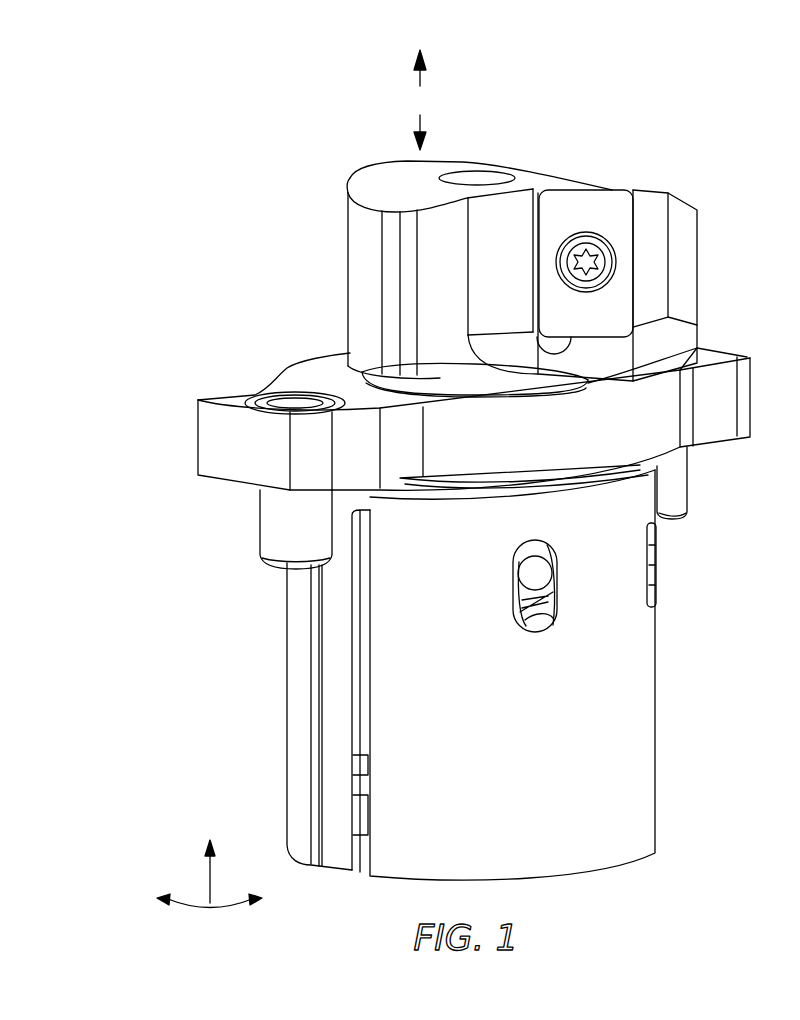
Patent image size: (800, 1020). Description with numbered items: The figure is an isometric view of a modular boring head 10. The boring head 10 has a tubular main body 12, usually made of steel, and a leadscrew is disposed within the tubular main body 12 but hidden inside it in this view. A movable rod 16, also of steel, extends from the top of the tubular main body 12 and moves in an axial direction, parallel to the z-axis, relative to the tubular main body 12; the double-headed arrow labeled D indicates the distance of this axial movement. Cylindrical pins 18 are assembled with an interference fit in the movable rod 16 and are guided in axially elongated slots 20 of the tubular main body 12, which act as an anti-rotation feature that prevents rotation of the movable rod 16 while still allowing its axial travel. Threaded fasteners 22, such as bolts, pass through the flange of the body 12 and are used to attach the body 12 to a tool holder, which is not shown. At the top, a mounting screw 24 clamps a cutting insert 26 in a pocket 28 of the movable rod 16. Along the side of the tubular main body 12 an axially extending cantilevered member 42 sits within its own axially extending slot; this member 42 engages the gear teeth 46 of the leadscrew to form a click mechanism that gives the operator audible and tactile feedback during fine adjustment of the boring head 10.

The modular boring head 10 is at (254, 156).
The tubular main body 12 is at (630, 732).
The movable rod 16 is at (347, 269).
The cylindrical pins 18 is at (537, 573).
The axially elongated slots 20 is at (536, 622).
The threaded fasteners 22 is at (268, 548).
The mounting screw 24 is at (612, 247).
The cutting insert 26 is at (622, 303).
The pocket 28 is at (670, 325).
The cantilevered member 42 is at (337, 768).
The gear teeth 46 is at (363, 834).